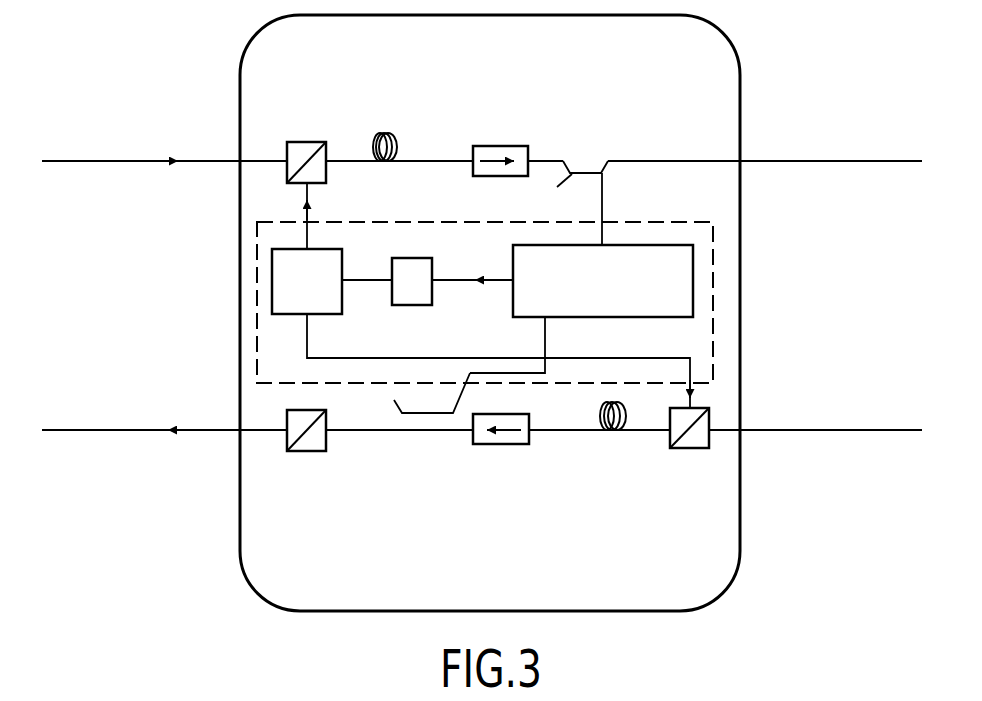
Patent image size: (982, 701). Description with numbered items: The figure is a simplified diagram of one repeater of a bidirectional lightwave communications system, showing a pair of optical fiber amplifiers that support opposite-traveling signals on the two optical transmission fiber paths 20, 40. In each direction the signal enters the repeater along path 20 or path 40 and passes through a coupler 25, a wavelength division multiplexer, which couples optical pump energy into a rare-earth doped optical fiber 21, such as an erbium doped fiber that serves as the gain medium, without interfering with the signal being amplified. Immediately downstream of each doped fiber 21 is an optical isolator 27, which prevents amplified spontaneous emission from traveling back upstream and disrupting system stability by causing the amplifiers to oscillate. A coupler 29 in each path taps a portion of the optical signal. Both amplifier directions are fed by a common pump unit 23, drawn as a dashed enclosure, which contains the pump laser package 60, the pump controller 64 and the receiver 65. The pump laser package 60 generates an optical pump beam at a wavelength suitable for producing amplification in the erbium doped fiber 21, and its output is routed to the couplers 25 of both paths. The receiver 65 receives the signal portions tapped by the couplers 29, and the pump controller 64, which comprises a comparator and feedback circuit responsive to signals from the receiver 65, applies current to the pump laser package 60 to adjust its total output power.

The optical transmission fiber path 20 is at (125, 161).
The rare-earth doped optical fiber 21 is at (382, 133).
The pump unit 23 is at (713, 298).
The coupler 25 is at (305, 142).
The optical isolator 27 is at (500, 146).
The coupler 29 is at (587, 173).
The optical transmission fiber path 40 is at (125, 430).
The pump laser package 60 is at (290, 317).
The pump controller 64 is at (405, 306).
The receiver 65 is at (513, 250).